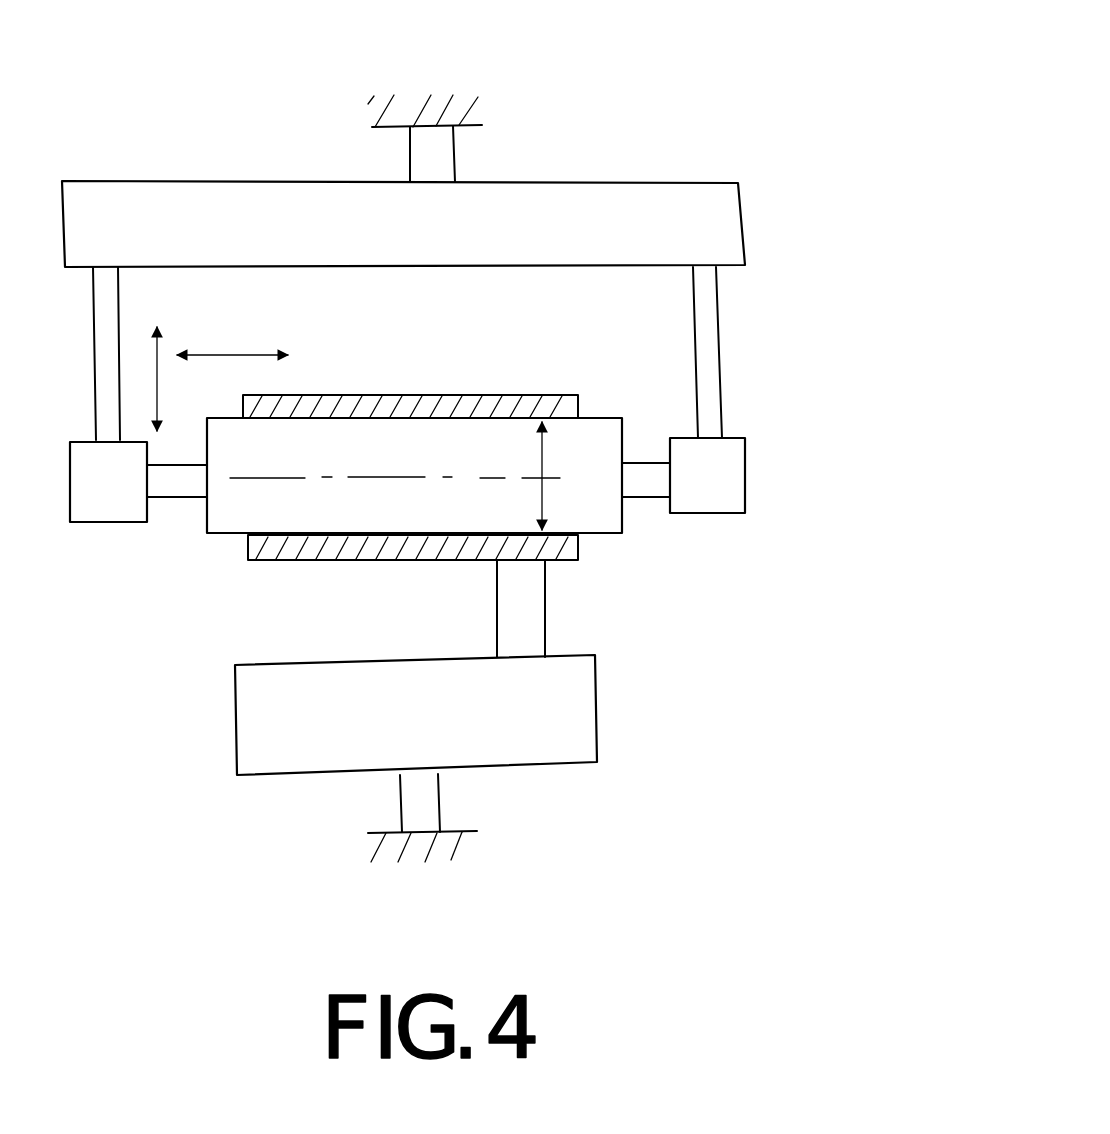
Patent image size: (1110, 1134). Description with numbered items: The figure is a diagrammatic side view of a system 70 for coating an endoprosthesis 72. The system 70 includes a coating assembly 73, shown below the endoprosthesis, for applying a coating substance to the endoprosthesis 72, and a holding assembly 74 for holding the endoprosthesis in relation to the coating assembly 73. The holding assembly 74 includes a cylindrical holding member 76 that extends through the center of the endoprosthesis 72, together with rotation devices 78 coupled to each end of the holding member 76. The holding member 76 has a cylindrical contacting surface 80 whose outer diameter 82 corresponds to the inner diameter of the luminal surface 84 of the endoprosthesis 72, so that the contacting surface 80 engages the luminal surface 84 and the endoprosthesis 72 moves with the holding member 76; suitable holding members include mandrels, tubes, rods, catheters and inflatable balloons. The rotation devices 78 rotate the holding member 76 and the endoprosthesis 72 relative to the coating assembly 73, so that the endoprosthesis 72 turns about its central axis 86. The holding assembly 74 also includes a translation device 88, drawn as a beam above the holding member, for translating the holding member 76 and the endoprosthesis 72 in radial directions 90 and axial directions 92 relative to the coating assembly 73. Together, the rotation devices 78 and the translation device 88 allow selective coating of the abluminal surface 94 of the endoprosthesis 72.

The system 70 is at (698, 72).
The endoprosthesis 72 is at (433, 536).
The coating assembly 73 is at (684, 692).
The holding assembly 74 is at (792, 339).
The cylindrical holding member 76 is at (624, 440).
The rotation devices 78 is at (102, 524).
The cylindrical contacting surface 80 is at (607, 537).
The outer diameter 82 is at (548, 460).
The luminal surface 84 is at (376, 426).
The central axis 86 is at (507, 478).
The translation device 88 is at (742, 219).
The radial directions 90 is at (162, 389).
The axial directions 92 is at (230, 350).
The abluminal surface 94 is at (402, 395).